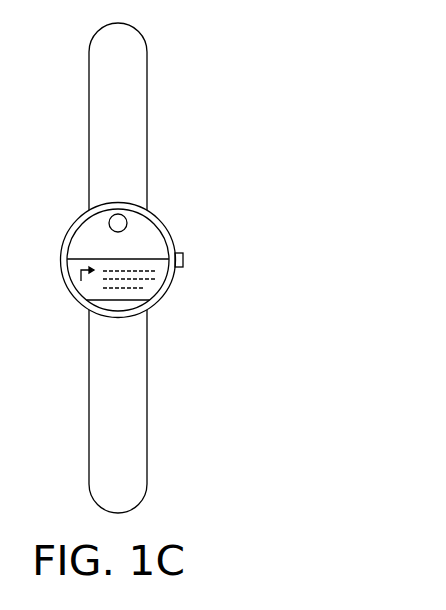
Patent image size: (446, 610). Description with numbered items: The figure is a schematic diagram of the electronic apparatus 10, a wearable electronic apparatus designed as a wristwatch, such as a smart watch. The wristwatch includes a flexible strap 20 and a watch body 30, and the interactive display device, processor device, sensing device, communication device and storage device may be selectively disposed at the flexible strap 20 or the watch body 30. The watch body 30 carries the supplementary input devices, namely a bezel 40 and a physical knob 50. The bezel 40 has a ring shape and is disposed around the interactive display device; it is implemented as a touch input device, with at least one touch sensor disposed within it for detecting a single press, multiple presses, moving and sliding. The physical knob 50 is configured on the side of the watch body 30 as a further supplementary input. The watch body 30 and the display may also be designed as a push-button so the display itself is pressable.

The electronic apparatus 10 is at (352, 509).
The flexible strap 20 is at (147, 94).
The watch body 30 is at (167, 290).
The bezel 40 is at (167, 234).
The physical knob 50 is at (183, 261).